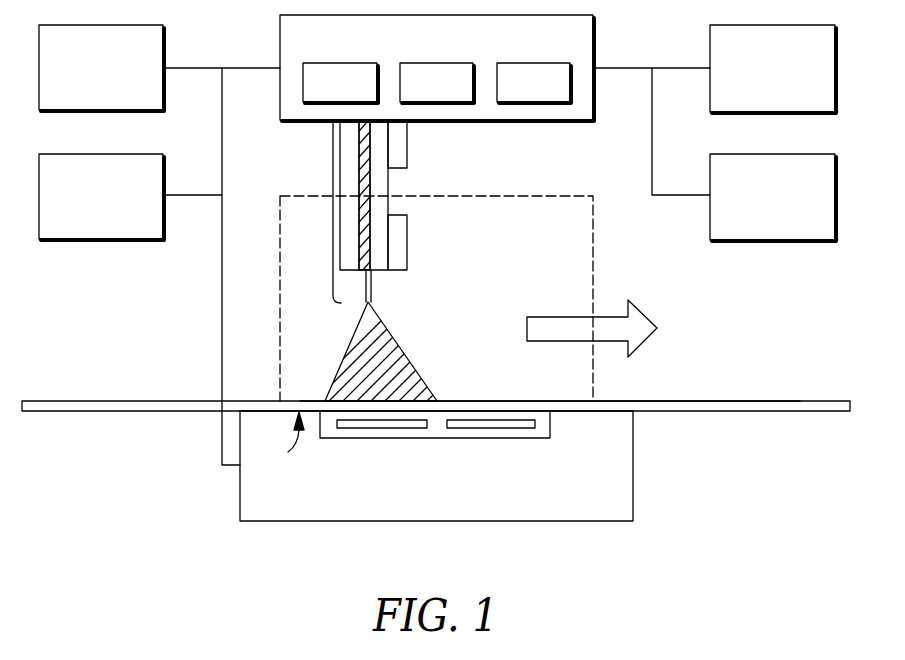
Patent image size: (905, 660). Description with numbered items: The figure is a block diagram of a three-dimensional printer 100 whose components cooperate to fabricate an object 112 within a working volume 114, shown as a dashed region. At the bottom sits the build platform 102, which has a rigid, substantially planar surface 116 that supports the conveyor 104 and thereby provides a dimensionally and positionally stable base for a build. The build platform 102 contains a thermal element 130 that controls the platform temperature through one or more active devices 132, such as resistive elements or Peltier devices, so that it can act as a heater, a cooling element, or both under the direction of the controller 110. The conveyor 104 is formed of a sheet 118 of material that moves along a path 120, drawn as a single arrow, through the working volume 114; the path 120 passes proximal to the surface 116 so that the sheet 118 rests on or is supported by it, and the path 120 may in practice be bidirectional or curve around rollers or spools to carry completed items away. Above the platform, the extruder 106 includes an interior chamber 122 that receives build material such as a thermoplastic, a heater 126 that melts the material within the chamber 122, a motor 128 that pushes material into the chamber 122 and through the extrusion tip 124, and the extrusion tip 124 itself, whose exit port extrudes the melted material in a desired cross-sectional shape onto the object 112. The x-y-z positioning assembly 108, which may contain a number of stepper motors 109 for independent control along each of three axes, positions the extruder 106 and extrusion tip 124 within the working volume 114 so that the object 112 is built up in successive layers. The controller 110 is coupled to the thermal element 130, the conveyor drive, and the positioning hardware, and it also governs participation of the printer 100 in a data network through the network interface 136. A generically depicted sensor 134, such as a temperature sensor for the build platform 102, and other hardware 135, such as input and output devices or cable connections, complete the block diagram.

The printer 100 is at (768, 292).
The build platform 102 is at (607, 507).
The conveyor 104 is at (109, 401).
The extruder 106 is at (333, 212).
The x-y-z positioning assembly 108 is at (338, 49).
The stepper motors 109 is at (356, 94).
The controller 110 is at (141, 221).
The object 112 is at (399, 347).
The working volume 114 is at (593, 245).
The surface 116 is at (289, 446).
The sheet of material 118 is at (740, 401).
The path 120 is at (568, 316).
The chamber 122 is at (378, 187).
The extrusion tip 124 is at (372, 287).
The heater 126 is at (407, 243).
The motor 128 is at (407, 147).
The thermal element 130 is at (533, 438).
The active devices 132 is at (492, 428).
The sensor 134 is at (765, 92).
The other hardware 135 is at (765, 219).
The network interface 136 is at (141, 94).